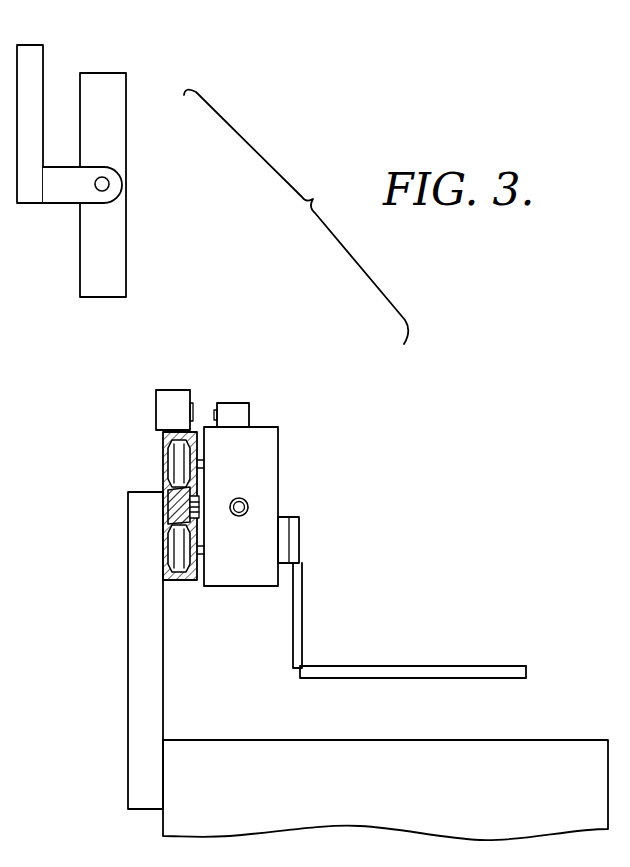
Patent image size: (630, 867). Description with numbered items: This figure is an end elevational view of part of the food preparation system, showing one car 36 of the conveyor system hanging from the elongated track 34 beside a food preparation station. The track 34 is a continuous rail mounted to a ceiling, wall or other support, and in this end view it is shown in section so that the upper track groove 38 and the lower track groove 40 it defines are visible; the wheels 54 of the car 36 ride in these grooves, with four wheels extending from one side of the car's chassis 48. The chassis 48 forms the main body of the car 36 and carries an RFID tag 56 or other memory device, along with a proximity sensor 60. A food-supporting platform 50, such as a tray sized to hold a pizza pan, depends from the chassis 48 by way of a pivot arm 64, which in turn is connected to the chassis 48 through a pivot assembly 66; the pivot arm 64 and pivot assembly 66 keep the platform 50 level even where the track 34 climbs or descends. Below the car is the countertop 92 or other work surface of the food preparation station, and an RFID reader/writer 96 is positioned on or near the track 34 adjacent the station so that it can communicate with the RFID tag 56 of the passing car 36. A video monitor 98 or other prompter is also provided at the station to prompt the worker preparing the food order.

The track 34 is at (127, 520).
The car 36 is at (298, 519).
The upper track groove 38 is at (164, 469).
The lower track groove 40 is at (170, 558).
The chassis 48 is at (263, 434).
The food-supporting platform 50 is at (443, 669).
The wheels 54 is at (171, 457).
The RFID tag 56 is at (232, 408).
The proximity sensor 60 is at (246, 507).
The pivot arm 64 is at (303, 621).
The pivot assembly 66 is at (292, 546).
The countertop 92 is at (478, 740).
The RFID reader/writer 96 is at (172, 395).
The video monitor 98 is at (88, 241).